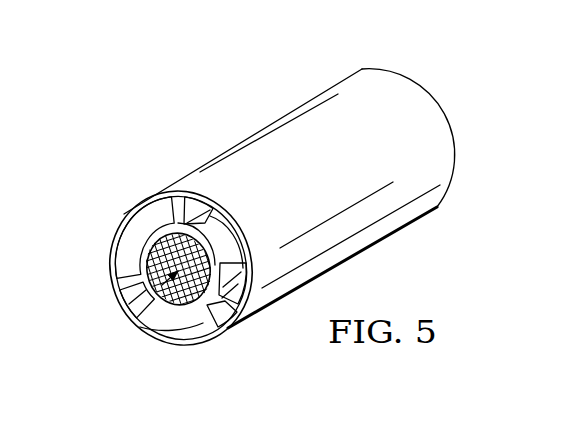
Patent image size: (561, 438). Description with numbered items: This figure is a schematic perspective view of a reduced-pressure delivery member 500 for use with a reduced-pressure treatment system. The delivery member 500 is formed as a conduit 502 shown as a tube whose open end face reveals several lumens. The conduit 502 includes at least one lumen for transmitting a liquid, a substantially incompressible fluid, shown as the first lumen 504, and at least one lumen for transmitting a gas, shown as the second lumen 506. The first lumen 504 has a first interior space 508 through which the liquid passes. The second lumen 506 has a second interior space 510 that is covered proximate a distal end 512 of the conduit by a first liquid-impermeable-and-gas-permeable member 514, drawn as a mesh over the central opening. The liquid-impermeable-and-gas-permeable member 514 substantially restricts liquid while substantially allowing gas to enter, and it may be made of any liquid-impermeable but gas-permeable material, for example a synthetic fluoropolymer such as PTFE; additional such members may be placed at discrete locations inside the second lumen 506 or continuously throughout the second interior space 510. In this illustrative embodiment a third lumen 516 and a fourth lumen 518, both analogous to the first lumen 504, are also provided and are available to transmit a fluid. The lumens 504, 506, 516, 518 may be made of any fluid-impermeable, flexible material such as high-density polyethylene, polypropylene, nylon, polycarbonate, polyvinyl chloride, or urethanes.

The reduced-pressure delivery member 500 is at (256, 126).
The conduit 502 is at (390, 77).
The first lumen 504 is at (140, 218).
The second lumen 506 is at (150, 262).
The first interior space 508 is at (134, 232).
The second interior space 510 is at (176, 306).
The distal end 512 is at (178, 194).
The first liquid-impermeable-and-gas-permeable member 514 is at (165, 283).
The third lumen 516 is at (226, 318).
The fourth lumen 518 is at (221, 240).